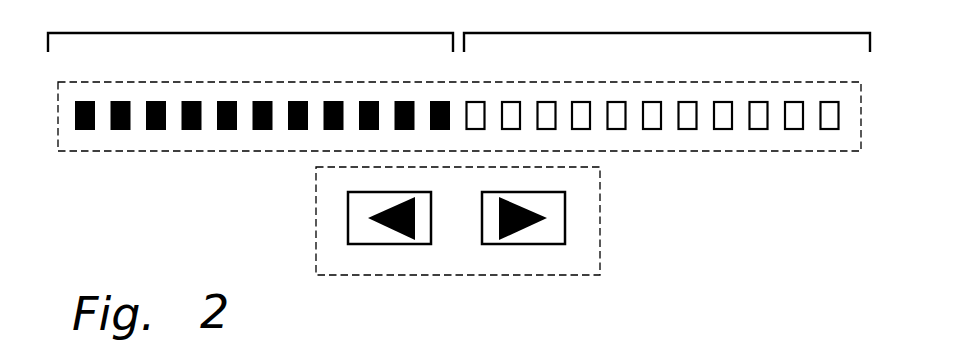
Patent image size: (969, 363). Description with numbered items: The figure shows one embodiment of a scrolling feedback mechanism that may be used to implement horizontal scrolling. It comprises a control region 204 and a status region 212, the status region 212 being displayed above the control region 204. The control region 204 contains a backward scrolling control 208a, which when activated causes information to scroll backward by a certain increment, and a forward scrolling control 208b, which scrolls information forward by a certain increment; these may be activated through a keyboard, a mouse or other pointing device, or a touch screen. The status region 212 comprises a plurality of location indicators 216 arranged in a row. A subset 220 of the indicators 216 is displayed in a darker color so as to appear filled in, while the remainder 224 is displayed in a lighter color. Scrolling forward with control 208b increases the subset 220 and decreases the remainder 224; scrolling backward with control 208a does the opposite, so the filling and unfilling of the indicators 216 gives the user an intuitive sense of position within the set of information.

The control region 204 is at (483, 242).
The backward scrolling control 208a is at (387, 245).
The forward scrolling control 208b is at (522, 245).
The status region 212 is at (459, 102).
The location indicators 216 is at (517, 100).
The subset of the indicators 220 is at (251, 33).
The remainder of the indicators 224 is at (664, 33).